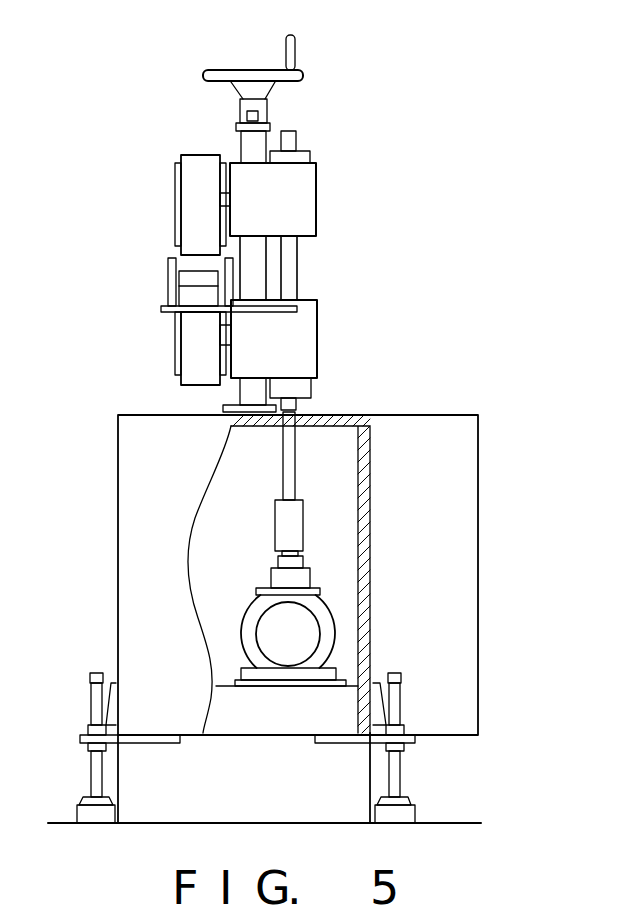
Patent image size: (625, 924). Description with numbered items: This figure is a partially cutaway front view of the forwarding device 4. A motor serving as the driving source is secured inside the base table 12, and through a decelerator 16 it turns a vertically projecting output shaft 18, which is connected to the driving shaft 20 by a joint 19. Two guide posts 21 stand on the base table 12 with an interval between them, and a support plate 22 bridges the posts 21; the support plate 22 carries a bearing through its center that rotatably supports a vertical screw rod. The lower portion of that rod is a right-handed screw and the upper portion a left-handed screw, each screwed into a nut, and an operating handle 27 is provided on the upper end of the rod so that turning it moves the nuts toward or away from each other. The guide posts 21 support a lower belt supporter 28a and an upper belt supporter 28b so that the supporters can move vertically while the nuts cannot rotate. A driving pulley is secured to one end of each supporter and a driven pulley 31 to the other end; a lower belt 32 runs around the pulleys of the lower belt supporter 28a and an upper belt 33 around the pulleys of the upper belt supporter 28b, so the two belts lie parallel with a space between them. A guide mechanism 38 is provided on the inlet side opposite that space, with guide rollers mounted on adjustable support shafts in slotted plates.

The operating handle 27 is at (213, 70).
The support plate 22 is at (238, 123).
The guide posts 21 is at (253, 142).
The upper belt supporter 28b is at (313, 200).
The upper belt 33 is at (185, 181).
The driven pulley 31 is at (172, 207).
The guide mechanism 38 is at (166, 272).
The lower belt 32 is at (190, 357).
The driving shaft 20 is at (300, 270).
The lower belt supporter 28a is at (314, 330).
The base table 12 is at (115, 540).
The forwarding device 4 is at (399, 397).
The joint 19 is at (300, 512).
The output shaft 18 is at (297, 553).
The decelerator 16 is at (305, 632).